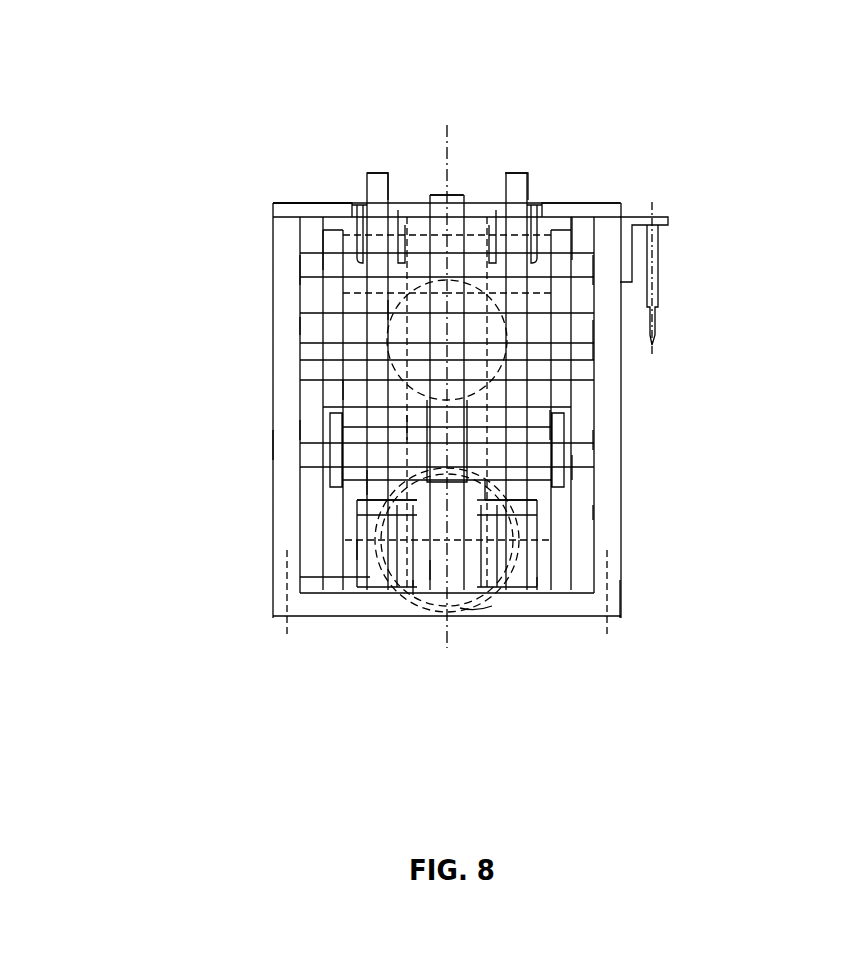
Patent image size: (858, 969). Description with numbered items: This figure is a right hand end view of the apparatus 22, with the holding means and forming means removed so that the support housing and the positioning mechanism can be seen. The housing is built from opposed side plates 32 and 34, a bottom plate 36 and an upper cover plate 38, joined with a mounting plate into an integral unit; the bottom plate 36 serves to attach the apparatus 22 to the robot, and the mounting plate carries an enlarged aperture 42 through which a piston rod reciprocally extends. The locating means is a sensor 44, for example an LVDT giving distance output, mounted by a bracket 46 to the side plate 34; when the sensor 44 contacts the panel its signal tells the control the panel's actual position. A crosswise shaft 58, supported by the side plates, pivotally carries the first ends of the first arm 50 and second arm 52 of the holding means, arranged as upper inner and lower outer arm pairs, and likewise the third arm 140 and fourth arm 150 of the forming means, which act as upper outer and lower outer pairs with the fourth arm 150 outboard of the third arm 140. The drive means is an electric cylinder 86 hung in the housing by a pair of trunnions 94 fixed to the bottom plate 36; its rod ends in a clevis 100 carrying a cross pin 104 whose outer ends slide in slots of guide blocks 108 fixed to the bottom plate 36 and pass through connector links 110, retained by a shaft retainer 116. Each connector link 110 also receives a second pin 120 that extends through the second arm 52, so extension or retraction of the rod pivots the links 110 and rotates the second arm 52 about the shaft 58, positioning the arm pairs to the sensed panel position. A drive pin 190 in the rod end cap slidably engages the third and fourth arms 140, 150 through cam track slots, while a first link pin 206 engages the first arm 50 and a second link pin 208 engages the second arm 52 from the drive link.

The apparatus 22 is at (410, 70).
The first arm 50 is at (378, 188).
The upper cover plate 38 is at (343, 213).
The third arm 140 is at (331, 250).
The fourth arm 150 is at (311, 267).
The aperture 42 is at (388, 308).
The shaft 58 is at (300, 325).
The second link pin 208 is at (417, 427).
The second arm 52 is at (345, 392).
The second pin 120 is at (303, 428).
The side plate 32 is at (285, 446).
The connector link 110 is at (377, 482).
The guide block 108 is at (355, 502).
The shaft retainer 116 is at (357, 548).
The trunnion 94 is at (370, 576).
The first link pin 206 is at (478, 208).
The bracket 46 is at (612, 222).
The sensor 44 is at (660, 258).
The drive pin 190 is at (590, 342).
The side plate 34 is at (600, 437).
The bottom plate 36 is at (620, 598).
The cross pin 104 is at (408, 585).
The clevis 100 is at (437, 568).
The electric cylinder 86 is at (476, 602).